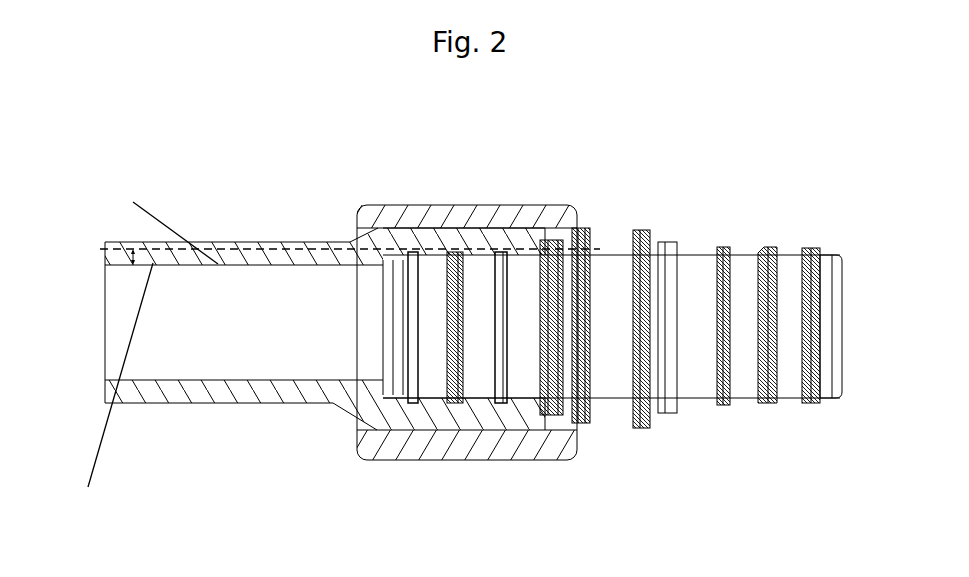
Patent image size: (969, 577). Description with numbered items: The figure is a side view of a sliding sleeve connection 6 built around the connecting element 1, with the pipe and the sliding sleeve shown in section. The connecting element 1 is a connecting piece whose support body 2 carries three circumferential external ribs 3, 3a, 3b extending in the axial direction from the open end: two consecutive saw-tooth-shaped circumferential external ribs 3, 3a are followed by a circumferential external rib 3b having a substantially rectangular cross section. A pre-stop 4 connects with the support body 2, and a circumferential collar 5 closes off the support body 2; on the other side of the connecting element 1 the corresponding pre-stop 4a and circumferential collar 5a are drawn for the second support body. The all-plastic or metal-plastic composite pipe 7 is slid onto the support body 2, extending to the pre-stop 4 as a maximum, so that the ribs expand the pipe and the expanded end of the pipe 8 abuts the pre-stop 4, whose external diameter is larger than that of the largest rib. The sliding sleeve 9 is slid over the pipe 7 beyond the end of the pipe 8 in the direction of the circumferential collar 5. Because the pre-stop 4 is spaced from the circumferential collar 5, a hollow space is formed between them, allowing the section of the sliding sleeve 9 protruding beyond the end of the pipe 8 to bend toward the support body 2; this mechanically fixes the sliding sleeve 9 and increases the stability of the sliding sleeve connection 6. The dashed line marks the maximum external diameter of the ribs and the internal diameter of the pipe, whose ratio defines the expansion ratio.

The connecting element 1 is at (812, 195).
The support body 2 is at (435, 287).
The circumferential external rib 3 is at (813, 330).
The circumferential external rib 3a is at (765, 282).
The circumferential external rib 3b is at (723, 380).
The pre-stop 4 is at (557, 267).
The pre-stop 4a is at (673, 403).
The circumferential collar 5 is at (582, 420).
The circumferential collar 5a is at (643, 428).
The sliding sleeve connection 6 is at (240, 146).
The pipe 7 is at (260, 393).
The end of the pipe 8 is at (422, 413).
The sliding sleeve 9 is at (473, 450).